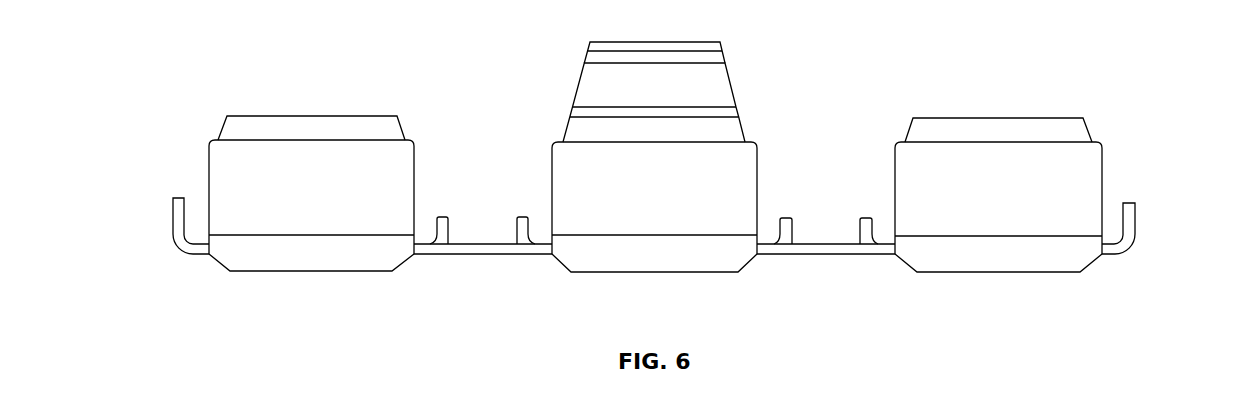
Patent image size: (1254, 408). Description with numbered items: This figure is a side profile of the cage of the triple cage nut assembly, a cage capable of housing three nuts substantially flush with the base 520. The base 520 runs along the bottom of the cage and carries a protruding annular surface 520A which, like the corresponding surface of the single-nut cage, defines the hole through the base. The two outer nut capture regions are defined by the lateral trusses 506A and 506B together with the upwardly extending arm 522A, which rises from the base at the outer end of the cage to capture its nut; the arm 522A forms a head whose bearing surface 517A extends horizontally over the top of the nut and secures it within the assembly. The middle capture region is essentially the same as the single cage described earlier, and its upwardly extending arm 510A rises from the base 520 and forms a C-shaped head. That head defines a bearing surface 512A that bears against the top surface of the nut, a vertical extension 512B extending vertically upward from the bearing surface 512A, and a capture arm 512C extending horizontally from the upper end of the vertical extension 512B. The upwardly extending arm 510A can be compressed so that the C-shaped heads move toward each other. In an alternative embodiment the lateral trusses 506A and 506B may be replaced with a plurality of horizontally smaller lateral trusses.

The base 520 is at (1122, 257).
The annular surface 520A is at (333, 262).
The lateral truss 506A is at (439, 215).
The lateral truss 506B is at (178, 223).
The upwardly extending arm 510A is at (731, 206).
The bearing surface 512A is at (735, 127).
The vertical extension 512B is at (717, 85).
The capture arm 512C is at (712, 45).
The bearing surface 517A is at (306, 127).
The upwardly extending arm 522A is at (234, 180).